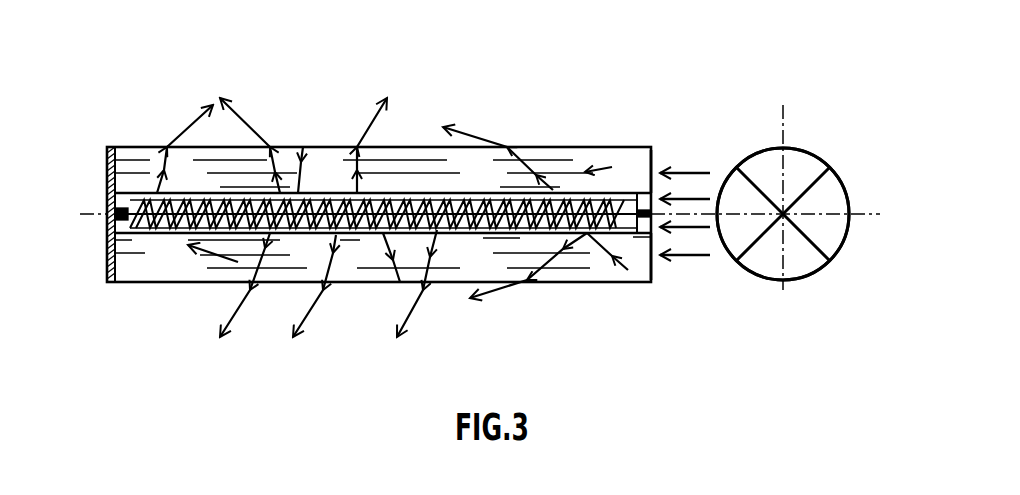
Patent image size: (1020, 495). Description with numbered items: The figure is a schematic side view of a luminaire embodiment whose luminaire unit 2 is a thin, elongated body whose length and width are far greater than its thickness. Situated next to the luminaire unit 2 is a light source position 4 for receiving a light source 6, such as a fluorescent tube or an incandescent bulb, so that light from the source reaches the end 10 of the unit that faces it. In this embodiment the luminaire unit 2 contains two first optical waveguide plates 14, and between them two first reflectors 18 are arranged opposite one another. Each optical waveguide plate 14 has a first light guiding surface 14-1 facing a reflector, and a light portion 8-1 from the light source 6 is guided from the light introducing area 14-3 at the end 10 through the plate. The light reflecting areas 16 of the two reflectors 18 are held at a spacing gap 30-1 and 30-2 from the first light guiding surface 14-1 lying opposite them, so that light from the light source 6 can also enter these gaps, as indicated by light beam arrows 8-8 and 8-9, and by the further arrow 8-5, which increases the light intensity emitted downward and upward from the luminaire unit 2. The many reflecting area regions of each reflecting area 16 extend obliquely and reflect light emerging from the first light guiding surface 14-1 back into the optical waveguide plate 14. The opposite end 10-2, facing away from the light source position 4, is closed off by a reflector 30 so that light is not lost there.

The luminaire unit 2 is at (533, 125).
The light source position 4 is at (813, 127).
The light source 6 is at (843, 179).
The light portion 8-1 is at (690, 258).
The incident light ray 8-5 is at (682, 170).
The light beam arrow 8-8 is at (708, 232).
The light beam arrow 8-9 is at (715, 195).
The end 10 is at (651, 150).
The end 10-2 is at (118, 147).
The first optical waveguide plate 14 is at (160, 147).
The first light guiding surface 14-1 is at (413, 193).
The light introducing area 14-3 is at (651, 160).
The first light reflecting area 16 is at (313, 193).
The first reflector 18 is at (108, 200).
The reflector 30 is at (107, 168).
The spacing gap 30-1 is at (588, 235).
The spacing gap 30-2 is at (572, 197).